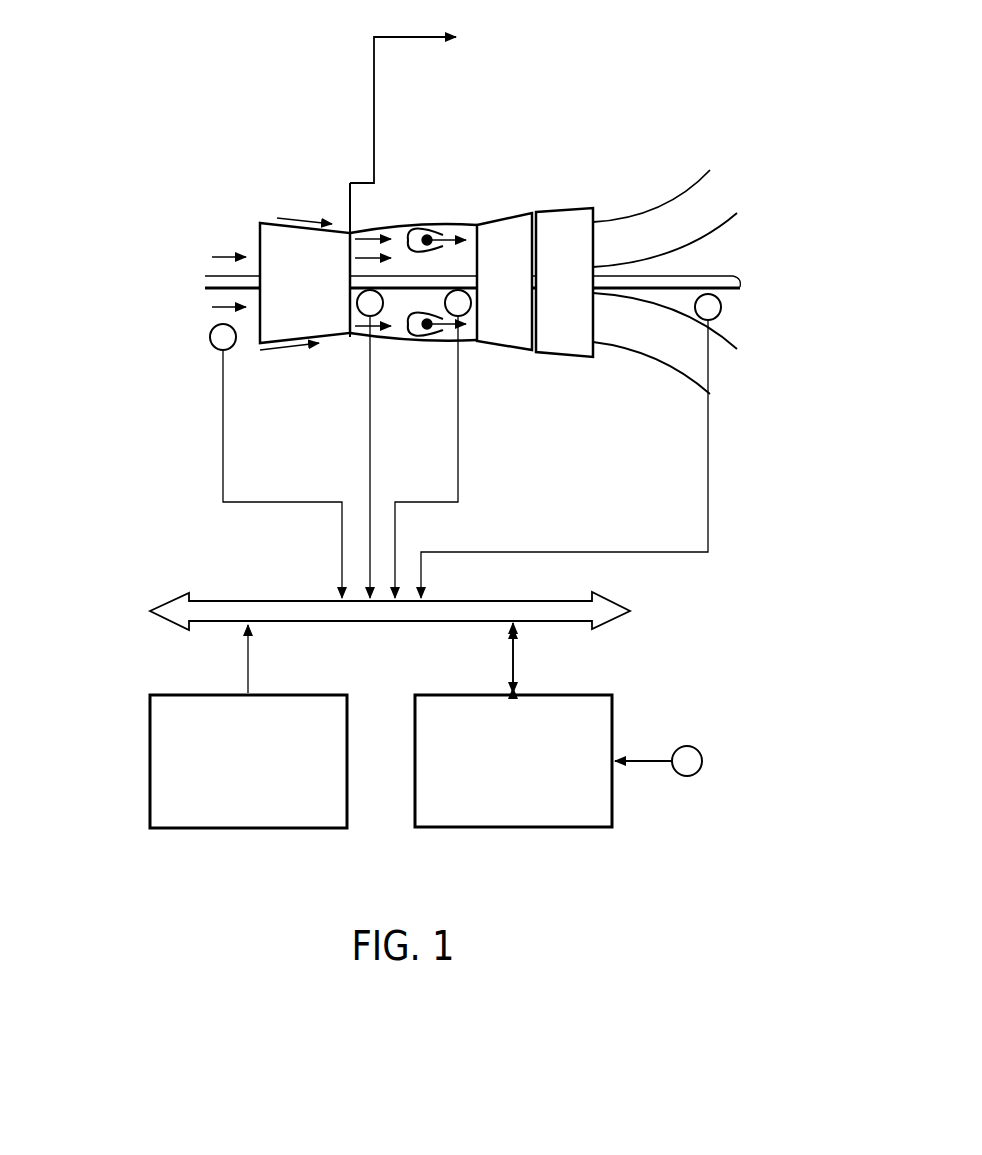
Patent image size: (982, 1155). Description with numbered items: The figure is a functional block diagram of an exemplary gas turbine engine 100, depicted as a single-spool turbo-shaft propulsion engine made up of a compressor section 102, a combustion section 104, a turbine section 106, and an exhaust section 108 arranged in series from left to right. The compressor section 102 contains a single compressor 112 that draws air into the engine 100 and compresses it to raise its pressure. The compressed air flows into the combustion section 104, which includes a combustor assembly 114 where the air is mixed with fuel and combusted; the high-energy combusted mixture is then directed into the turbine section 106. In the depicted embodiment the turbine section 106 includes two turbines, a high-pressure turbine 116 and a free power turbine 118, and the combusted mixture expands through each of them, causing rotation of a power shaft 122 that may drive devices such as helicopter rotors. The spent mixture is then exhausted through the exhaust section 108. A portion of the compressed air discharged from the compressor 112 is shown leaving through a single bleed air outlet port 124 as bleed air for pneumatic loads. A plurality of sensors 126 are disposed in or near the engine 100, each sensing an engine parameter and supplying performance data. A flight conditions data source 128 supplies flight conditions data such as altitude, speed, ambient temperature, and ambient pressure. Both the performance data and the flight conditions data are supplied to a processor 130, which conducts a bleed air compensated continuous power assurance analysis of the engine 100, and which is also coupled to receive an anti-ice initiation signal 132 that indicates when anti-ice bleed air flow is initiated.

The gas turbine engine 100 is at (156, 212).
The compressor section 102 is at (365, 150).
The combustion section 104 is at (388, 150).
The turbine section 106 is at (592, 150).
The exhaust section 108 is at (629, 245).
The compressor 112 is at (284, 295).
The combustor assembly 114 is at (428, 229).
The high-pressure turbine 116 is at (484, 295).
The free power turbine 118 is at (543, 295).
The power shaft 122 is at (717, 280).
The bleed air outlet port 124 is at (345, 222).
The sensors 126 is at (233, 346).
The flight conditions data source 128 is at (150, 734).
The processor 130 is at (612, 733).
The anti-ice initiation signal 132 is at (655, 765).